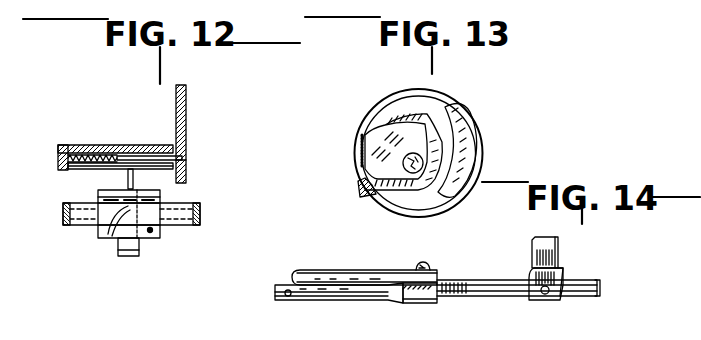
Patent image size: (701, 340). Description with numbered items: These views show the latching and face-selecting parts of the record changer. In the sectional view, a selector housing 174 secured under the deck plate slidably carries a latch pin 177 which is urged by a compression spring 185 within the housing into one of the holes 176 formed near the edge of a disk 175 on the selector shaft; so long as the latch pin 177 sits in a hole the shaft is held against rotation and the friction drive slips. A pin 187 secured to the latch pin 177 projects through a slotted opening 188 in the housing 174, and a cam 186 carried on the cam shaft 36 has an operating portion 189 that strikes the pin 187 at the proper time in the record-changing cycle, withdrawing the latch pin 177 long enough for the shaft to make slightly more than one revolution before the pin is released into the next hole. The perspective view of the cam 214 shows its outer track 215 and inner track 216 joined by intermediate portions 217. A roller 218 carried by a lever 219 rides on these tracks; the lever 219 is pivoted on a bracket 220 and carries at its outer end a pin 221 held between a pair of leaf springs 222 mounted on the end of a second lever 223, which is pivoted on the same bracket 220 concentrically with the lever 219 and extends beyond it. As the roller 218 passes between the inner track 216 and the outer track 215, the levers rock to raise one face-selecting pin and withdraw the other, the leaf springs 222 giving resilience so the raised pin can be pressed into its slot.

In FIG. 12, the selector housing 174 is at (78, 144).
In FIG. 12, the compression spring 185 is at (99, 155).
In FIG. 12, the latch pin 177 is at (150, 156).
In FIG. 12, the holes 176 is at (186, 136).
In FIG. 12, the disk 175 is at (186, 170).
In FIG. 12, the slotted opening 188 is at (70, 167).
In FIG. 12, the pin 187 is at (127, 178).
In FIG. 12, the operating portion 189 is at (104, 240).
In FIG. 12, the cam 186 is at (141, 238).
In FIG. 12, the cam shaft 36 is at (183, 226).
In FIG. 13, the outer track 215 is at (392, 112).
In FIG. 13, the cam 214 is at (470, 121).
In FIG. 13, the inner track 216 is at (443, 167).
In FIG. 13, the intermediate portions 217 is at (427, 124).
In FIG. 14, the lever 219 is at (383, 272).
In FIG. 14, the roller 218 is at (424, 262).
In FIG. 14, the pin 221 is at (288, 301).
In FIG. 14, the leaf springs 222 is at (342, 292).
In FIG. 14, the lever 223 is at (496, 290).
In FIG. 14, the bracket 220 is at (568, 252).